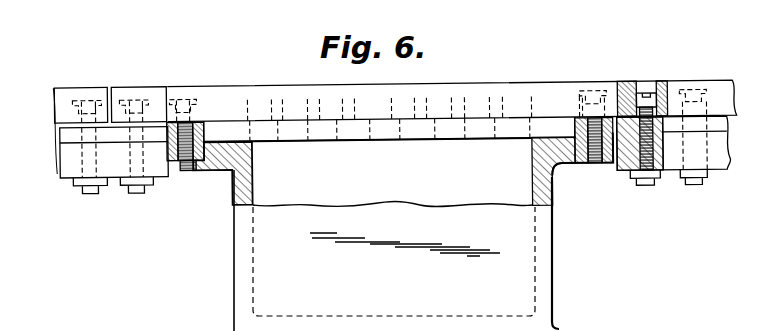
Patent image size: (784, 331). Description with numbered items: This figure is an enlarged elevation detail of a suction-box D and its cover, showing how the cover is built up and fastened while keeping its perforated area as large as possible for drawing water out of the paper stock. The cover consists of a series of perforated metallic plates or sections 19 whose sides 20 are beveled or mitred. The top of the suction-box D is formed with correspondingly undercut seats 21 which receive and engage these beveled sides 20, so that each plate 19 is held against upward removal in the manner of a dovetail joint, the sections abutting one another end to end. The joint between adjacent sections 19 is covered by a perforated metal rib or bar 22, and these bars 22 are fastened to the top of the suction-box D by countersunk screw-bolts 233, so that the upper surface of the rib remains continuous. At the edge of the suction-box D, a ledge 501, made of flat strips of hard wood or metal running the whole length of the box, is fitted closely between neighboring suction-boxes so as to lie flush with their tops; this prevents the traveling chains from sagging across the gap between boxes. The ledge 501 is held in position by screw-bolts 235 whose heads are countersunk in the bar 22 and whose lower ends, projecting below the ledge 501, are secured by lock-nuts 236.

The beveled or mitred sides 20 is at (210, 127).
The metal rib or bar 22 is at (157, 92).
The countersunk screw-bolts 233 is at (185, 95).
The perforated metallic plates or sections 19 is at (357, 133).
The undercut seats 21 is at (224, 143).
The ledges 501 is at (160, 170).
The lock-nuts 236 is at (123, 186).
The screw-bolts 235 is at (683, 88).
The suction-box D is at (546, 248).